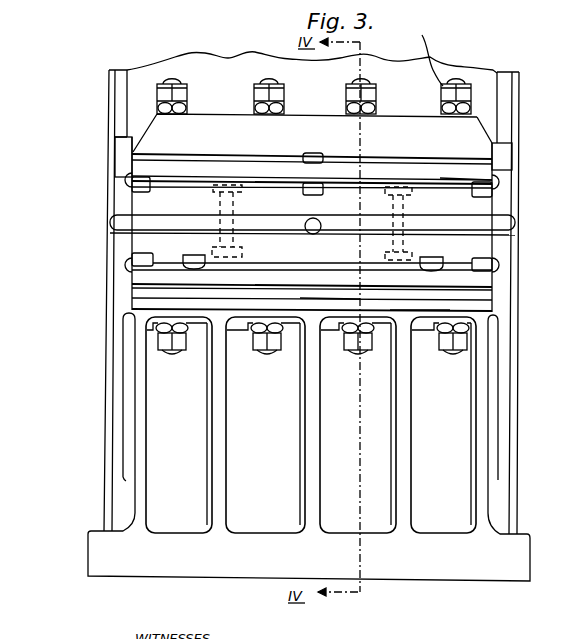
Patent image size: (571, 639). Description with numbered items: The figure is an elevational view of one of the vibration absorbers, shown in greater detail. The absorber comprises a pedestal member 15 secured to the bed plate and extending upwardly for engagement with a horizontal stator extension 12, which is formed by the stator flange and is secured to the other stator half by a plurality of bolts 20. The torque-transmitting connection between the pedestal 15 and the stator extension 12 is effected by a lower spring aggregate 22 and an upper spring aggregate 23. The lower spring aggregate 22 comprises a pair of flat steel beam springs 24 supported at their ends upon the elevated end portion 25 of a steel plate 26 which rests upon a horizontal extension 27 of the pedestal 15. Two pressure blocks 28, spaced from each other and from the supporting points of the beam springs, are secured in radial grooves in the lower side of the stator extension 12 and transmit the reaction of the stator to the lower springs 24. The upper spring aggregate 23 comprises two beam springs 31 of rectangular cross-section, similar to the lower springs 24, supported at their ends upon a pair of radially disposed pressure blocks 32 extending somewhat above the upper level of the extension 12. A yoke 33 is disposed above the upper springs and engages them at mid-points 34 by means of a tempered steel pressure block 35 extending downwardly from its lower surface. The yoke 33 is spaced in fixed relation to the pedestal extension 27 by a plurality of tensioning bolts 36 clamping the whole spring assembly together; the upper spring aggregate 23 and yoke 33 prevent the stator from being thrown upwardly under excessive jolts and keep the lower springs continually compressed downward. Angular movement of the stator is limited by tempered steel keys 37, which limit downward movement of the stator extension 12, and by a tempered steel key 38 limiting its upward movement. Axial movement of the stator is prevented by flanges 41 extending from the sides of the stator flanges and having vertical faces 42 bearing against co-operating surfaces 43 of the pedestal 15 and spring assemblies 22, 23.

The horizontal stator extension 12 is at (352, 210).
The pedestal member 15 is at (303, 440).
The bolts 20 is at (213, 200).
The lower spring aggregate 22 is at (478, 285).
The upper spring aggregate 23 is at (485, 175).
The beam springs 24 is at (312, 275).
The elevated end portion 25 is at (135, 290).
The steel plate 26 is at (327, 298).
The horizontal extension 27 is at (417, 303).
The pressure blocks 28 is at (196, 252).
The beam springs 31 is at (312, 177).
The pressure blocks 32 is at (132, 183).
The yoke 33 is at (452, 151).
The mid-points 34 is at (331, 160).
The pressure block 35 is at (305, 154).
The tensioning bolts 36 is at (367, 90).
The keys 37 is at (146, 252).
The key 38 is at (324, 190).
The flanges 41 is at (123, 164).
The vertical faces 42 is at (133, 147).
The co-operating surfaces 43 is at (512, 308).